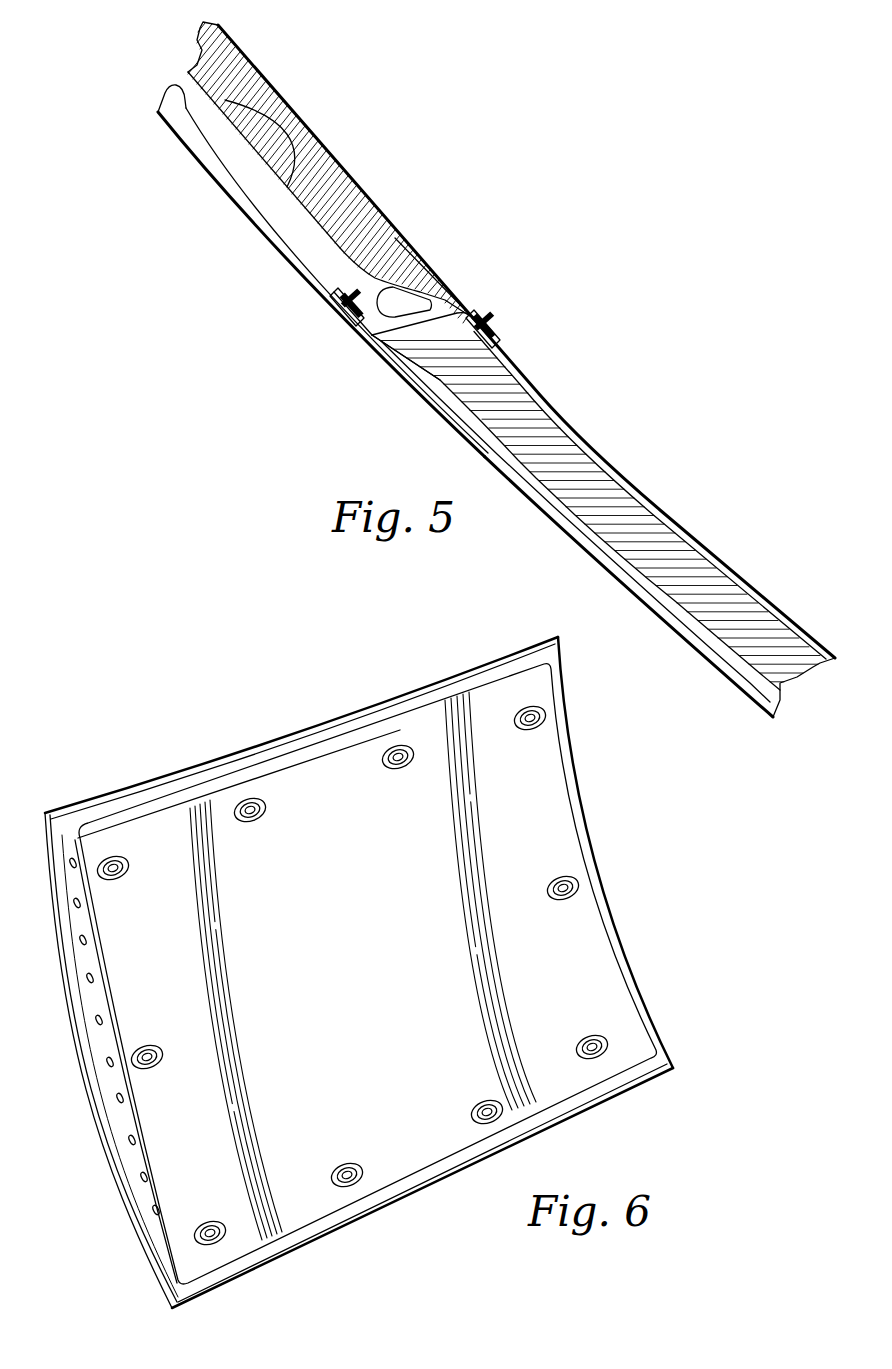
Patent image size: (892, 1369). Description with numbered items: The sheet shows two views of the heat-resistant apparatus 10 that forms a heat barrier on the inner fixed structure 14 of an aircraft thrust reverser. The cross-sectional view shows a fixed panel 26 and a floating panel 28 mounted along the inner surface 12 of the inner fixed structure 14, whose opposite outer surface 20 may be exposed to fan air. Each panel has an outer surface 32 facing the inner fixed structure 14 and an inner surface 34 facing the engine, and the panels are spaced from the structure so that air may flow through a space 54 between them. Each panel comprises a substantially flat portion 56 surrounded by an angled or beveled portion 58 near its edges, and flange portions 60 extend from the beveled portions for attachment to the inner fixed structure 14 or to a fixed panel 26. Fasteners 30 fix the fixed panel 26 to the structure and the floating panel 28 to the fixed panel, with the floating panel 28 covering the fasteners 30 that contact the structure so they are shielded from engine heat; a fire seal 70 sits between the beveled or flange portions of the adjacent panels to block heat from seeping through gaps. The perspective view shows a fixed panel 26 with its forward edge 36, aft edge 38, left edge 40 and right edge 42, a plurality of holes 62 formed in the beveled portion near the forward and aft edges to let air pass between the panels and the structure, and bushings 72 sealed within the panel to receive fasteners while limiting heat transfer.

In FIG. 5, the heat-resistant apparatus 10 is at (604, 356).
In FIG. 5, the inner surface 12 is at (178, 84).
In FIG. 5, the inner fixed structure 14 is at (600, 592).
In FIG. 5, the outer surface 20 is at (222, 188).
In FIG. 5, the fixed panel 26 is at (585, 452).
In FIG. 6, the fixed panel 26 is at (683, 915).
In FIG. 5, the floating panel 28 is at (372, 193).
In FIG. 5, the fastener 30 is at (332, 318).
In FIG. 5, the outer surface 32 is at (545, 500).
In FIG. 5, the inner surface 34 is at (633, 487).
In FIG. 6, the inner surface 34 is at (364, 964).
In FIG. 6, the forward edge 36 is at (83, 1063).
In FIG. 6, the aft edge 38 is at (600, 850).
In FIG. 6, the left edge 40 is at (297, 728).
In FIG. 6, the right edge 42 is at (420, 1192).
In FIG. 5, the space 54 is at (247, 177).
In FIG. 5, the flat portion 56 is at (225, 100).
In FIG. 6, the flat portion 56 is at (543, 797).
In FIG. 5, the angled or beveled portion 58 is at (405, 246).
In FIG. 6, the angled or beveled portion 58 is at (510, 682).
In FIG. 5, the flange portion 60 is at (338, 300).
In FIG. 6, the flange portion 60 is at (453, 687).
In FIG. 6, the holes 62 is at (130, 1142).
In FIG. 5, the fire seal 70 is at (447, 292).
In FIG. 6, the bushing 72 is at (117, 858).